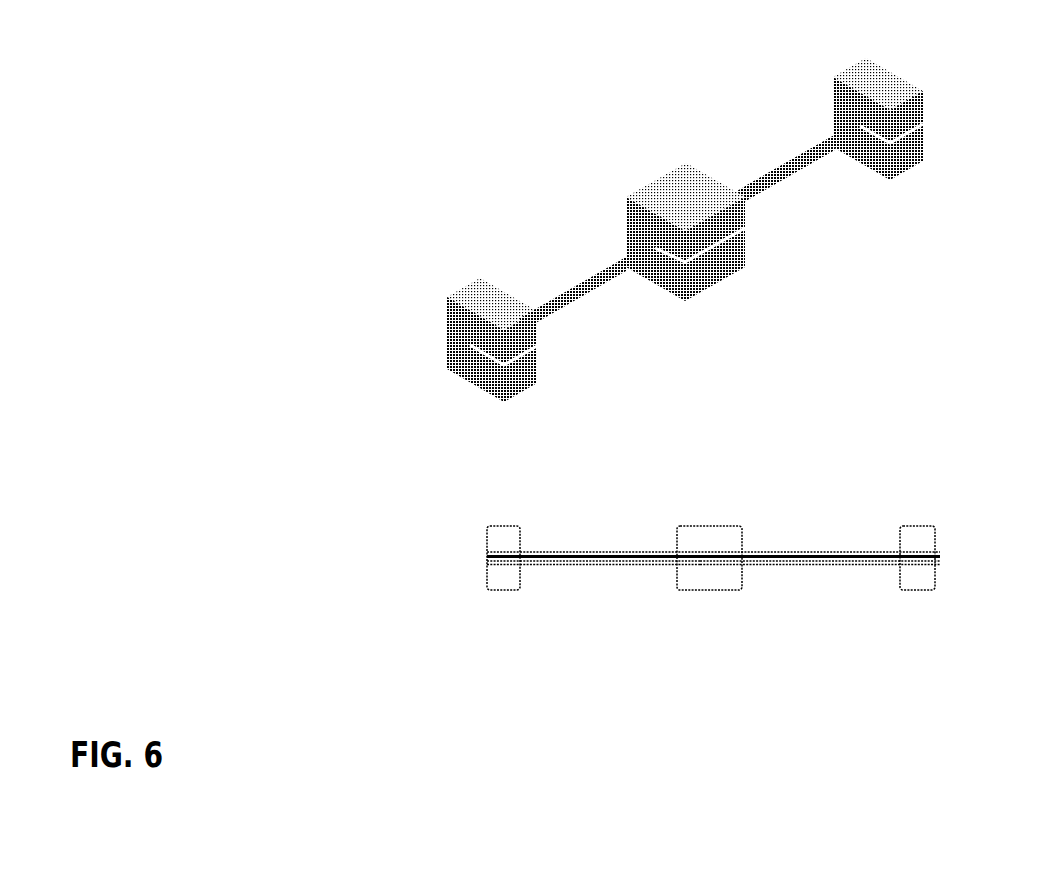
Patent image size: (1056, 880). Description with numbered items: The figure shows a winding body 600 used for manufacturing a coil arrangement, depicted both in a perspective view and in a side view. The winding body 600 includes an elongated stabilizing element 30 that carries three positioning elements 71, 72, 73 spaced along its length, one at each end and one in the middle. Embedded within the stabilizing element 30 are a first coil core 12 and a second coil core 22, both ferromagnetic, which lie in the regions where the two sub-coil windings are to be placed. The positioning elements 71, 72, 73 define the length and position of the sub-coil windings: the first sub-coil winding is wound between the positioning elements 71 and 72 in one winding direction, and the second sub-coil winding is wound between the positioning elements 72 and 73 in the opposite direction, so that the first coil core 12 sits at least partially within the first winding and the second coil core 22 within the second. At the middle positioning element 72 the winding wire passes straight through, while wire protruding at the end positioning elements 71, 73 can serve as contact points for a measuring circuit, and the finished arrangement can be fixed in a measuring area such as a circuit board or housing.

The winding body 600 is at (240, 160).
The positioning element 71 is at (478, 298).
The positioning element 72 is at (668, 190).
The positioning element 73 is at (887, 85).
The stabilizing element 30 is at (579, 287).
The first coil core 12 is at (575, 562).
The second coil core 22 is at (827, 562).